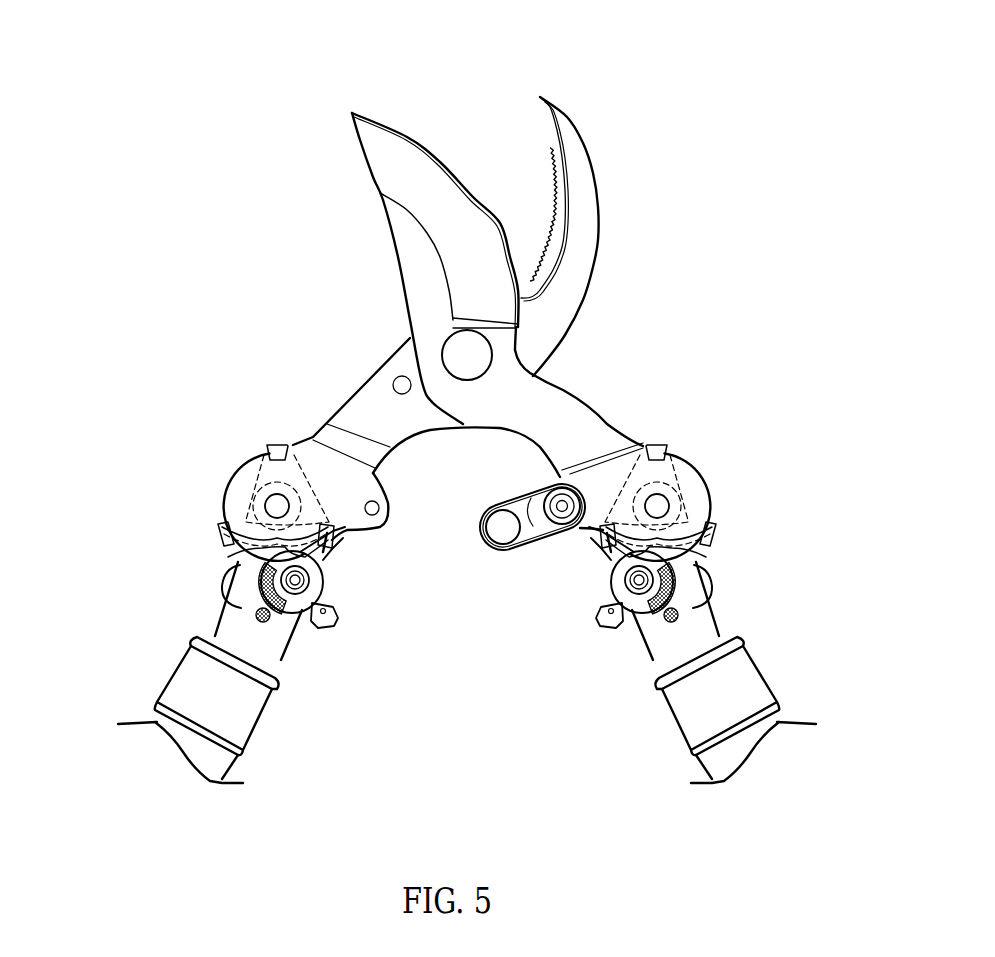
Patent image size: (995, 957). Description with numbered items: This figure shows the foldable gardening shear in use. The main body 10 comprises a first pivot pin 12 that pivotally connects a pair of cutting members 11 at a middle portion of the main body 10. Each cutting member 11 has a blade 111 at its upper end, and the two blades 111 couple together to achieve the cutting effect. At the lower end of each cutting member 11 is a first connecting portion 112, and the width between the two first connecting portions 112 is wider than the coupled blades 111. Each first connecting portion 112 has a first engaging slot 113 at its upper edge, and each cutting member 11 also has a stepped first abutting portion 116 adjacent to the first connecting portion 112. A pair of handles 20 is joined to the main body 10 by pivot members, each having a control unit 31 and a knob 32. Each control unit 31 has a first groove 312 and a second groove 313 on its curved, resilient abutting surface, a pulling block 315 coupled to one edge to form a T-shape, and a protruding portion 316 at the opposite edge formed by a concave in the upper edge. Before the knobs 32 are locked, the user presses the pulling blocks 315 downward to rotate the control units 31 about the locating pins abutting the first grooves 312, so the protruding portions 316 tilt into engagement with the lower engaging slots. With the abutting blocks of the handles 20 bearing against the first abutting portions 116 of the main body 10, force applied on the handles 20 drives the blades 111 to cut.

The main body 10 is at (494, 281).
The cutting member 11 is at (353, 407).
The blade 111 is at (397, 147).
The first connecting portion 112 is at (233, 488).
The first engaging slot 113 is at (271, 452).
The first pivot pin 12 is at (455, 350).
The knob 32 is at (300, 502).
The first abutting portion 116 is at (580, 528).
The control unit 31 is at (330, 585).
The protruding portion 316 is at (243, 557).
The second groove 313 is at (225, 592).
The pulling block 315 is at (334, 618).
The first groove 312 is at (287, 617).
The handle 20 is at (150, 700).